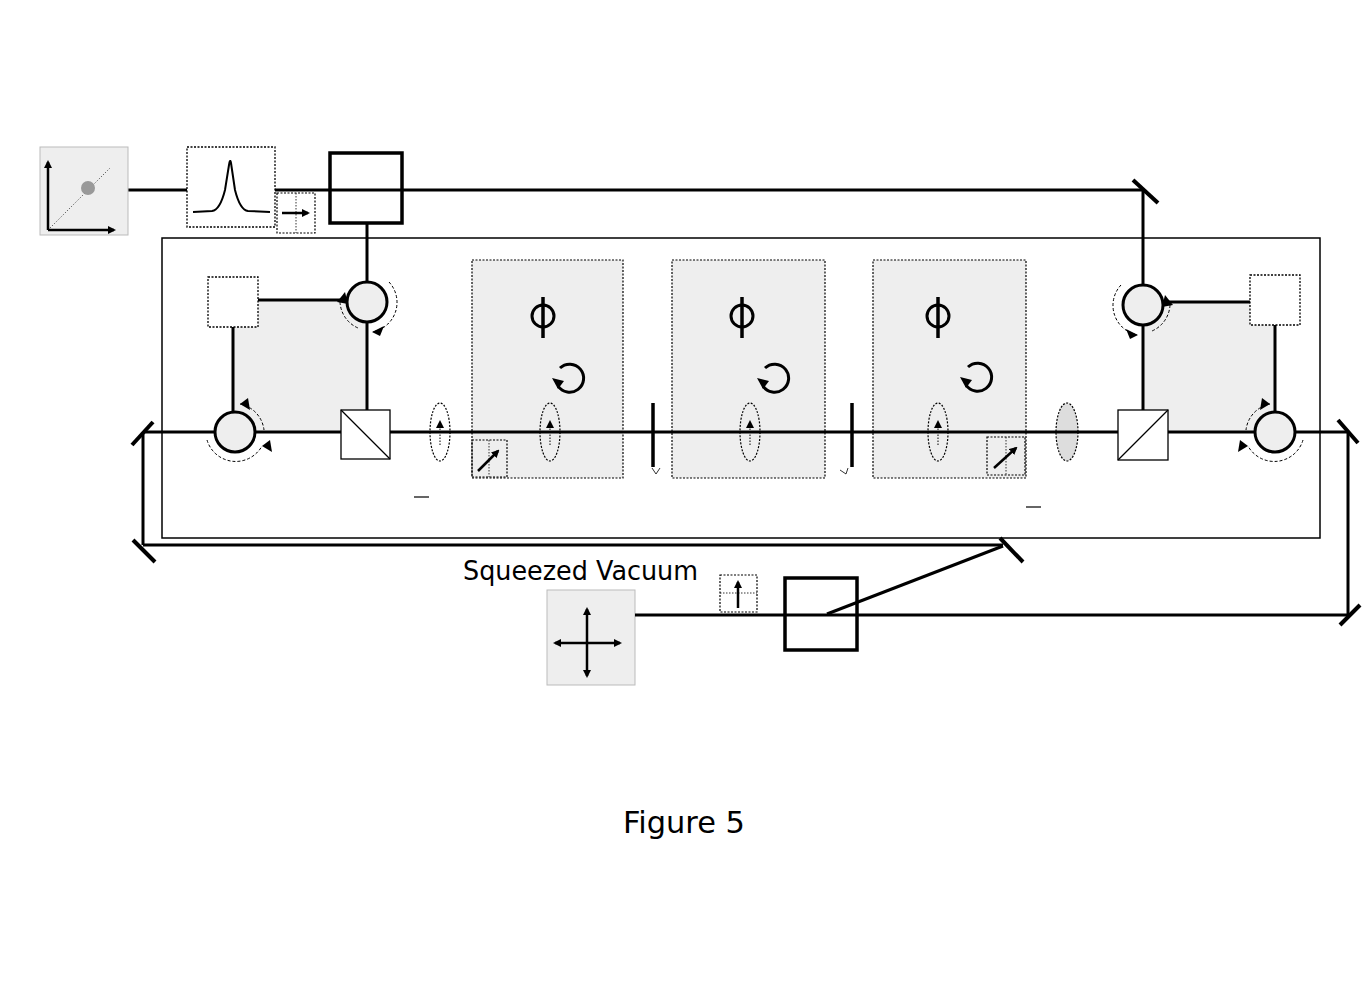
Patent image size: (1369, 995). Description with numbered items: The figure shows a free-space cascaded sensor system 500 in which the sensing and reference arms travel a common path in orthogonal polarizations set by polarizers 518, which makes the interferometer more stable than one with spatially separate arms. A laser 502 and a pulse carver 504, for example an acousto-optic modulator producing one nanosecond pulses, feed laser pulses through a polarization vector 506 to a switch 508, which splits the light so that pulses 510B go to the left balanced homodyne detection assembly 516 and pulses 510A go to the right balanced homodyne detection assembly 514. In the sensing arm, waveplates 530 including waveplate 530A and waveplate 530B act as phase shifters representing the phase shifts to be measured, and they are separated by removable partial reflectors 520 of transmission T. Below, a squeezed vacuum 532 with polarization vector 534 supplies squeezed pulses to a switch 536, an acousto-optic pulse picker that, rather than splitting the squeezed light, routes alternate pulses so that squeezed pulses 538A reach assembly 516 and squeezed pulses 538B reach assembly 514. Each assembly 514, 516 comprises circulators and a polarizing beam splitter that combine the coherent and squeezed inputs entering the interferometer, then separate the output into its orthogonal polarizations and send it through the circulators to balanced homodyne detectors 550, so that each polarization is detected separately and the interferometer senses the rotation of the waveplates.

The free-space cascaded sensor system 500 is at (728, 85).
The laser 502 is at (84, 173).
The pulse carver 504 is at (231, 167).
The polarization vector 506 is at (293, 205).
The switch 508 is at (411, 172).
The pulses 510A is at (795, 182).
The pulses 510B is at (372, 233).
The balanced homodyne detection assembly 514 is at (1216, 338).
The balanced homodyne detection assembly 516 is at (285, 367).
The polarizer 518 is at (758, 449).
The partial reflectors 520 is at (752, 464).
The waveplate 530A is at (547, 369).
The waveplate 530B is at (748, 369).
The waveplates 530 is at (949, 369).
The squeezed vacuum 532 is at (591, 659).
The polarization vector 534 is at (732, 620).
The switch 536 is at (825, 658).
The squeezed pulses 538A is at (948, 582).
The squeezed pulses 538B is at (1055, 625).
The homodyne detectors 550 is at (754, 301).